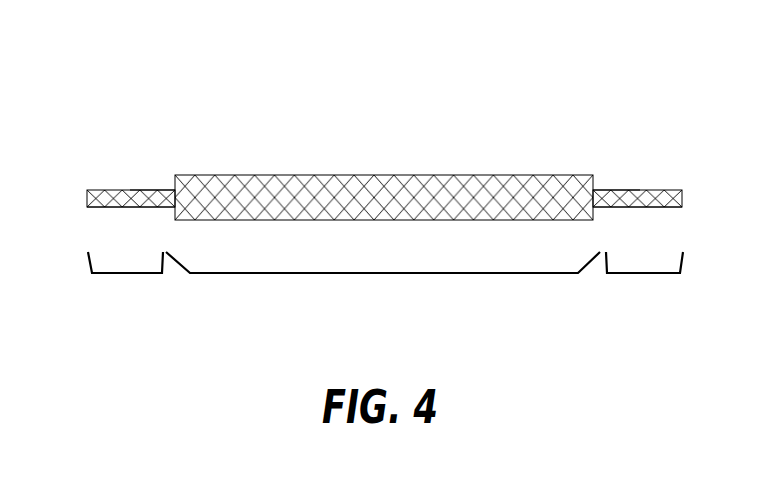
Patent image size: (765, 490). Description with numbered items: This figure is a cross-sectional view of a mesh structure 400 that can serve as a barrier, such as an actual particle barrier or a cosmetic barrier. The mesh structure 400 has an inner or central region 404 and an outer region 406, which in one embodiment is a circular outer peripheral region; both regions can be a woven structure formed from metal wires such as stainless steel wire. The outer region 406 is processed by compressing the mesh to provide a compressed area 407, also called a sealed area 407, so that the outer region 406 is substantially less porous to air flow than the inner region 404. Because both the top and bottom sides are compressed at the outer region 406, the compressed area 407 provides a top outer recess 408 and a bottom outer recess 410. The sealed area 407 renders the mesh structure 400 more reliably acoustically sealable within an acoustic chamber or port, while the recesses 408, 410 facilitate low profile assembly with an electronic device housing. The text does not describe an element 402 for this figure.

The mesh structure 400 is at (381, 192).
The central hatched body 402 is at (384, 197).
The inner region 404 is at (383, 275).
The outer region 406 is at (130, 275).
The compressed area 407 is at (102, 180).
The top outer recess 408 is at (158, 185).
The bottom outer recess 410 is at (112, 215).